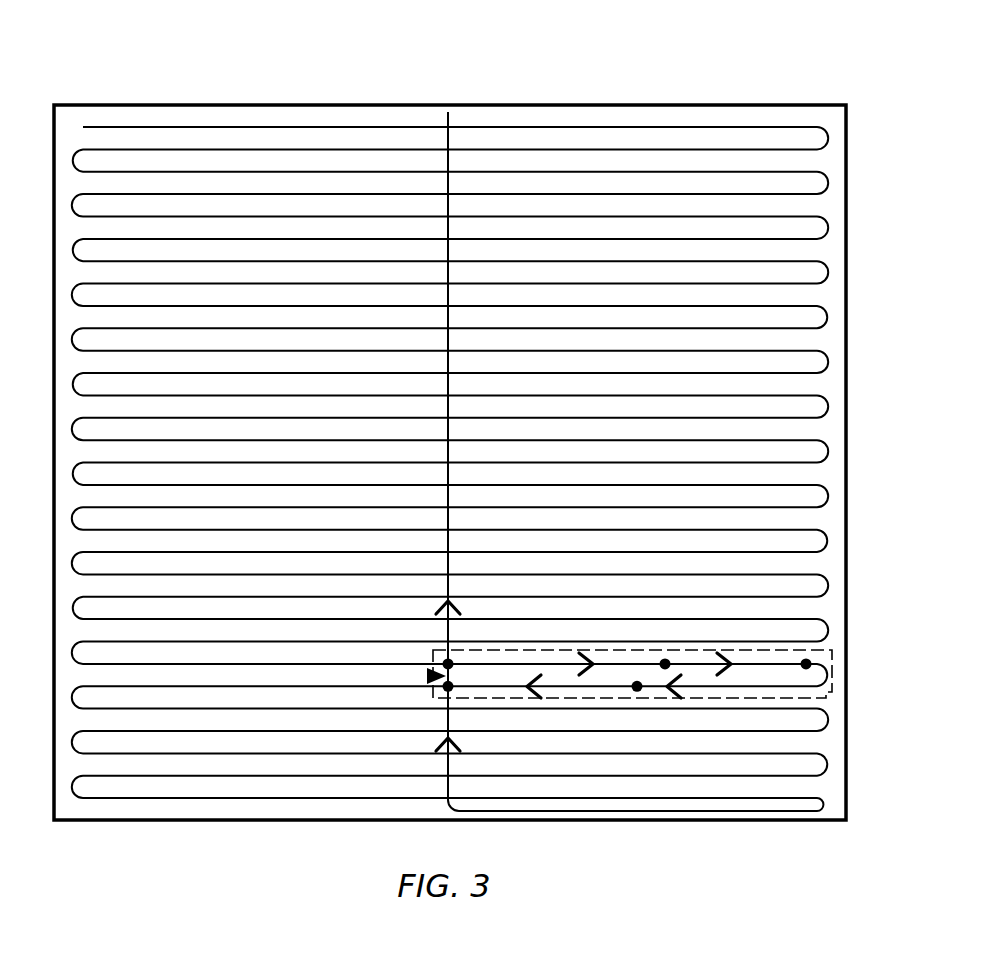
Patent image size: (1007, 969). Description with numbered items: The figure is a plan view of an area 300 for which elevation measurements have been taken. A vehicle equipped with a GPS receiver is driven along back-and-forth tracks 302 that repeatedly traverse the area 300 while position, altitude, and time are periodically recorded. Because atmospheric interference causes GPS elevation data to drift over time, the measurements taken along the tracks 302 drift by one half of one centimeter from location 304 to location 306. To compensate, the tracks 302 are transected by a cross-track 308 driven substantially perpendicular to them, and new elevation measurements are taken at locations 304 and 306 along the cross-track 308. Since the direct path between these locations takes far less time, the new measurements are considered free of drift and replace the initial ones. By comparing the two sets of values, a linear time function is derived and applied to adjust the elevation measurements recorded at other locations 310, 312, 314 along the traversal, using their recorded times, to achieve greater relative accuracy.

The area 300 is at (678, 99).
The back-and-forth tracks 302 is at (841, 681).
The location 304 is at (445, 663).
The location 306 is at (445, 687).
The cross-track 308 is at (430, 676).
The location 310 is at (668, 661).
The location 312 is at (808, 660).
The location 314 is at (640, 690).